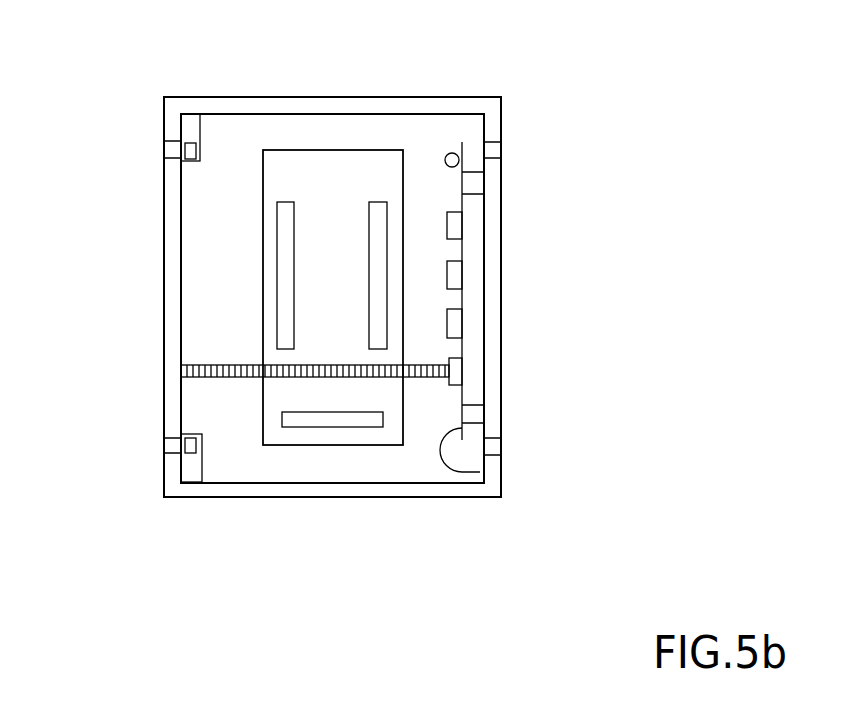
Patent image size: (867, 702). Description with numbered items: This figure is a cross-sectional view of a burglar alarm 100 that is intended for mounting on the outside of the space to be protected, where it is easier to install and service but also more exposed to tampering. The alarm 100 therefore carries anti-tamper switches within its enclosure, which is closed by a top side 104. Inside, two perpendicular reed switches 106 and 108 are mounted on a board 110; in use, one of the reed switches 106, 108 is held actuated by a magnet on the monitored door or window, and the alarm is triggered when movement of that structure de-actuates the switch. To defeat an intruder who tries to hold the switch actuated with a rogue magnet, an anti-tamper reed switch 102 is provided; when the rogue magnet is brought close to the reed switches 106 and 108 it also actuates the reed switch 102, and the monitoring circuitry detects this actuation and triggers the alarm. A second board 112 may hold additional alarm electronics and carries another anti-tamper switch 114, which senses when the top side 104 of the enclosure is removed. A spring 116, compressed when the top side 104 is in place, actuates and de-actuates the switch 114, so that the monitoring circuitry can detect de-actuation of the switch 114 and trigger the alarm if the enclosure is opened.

The burglar alarm 100 is at (513, 541).
The reed switch 102 is at (283, 223).
The top side 104 is at (173, 383).
The reed switch 106 is at (367, 213).
The reed switch 108 is at (313, 415).
The board 110 is at (287, 147).
The second board 112 is at (480, 472).
The anti-tamper switch 114 is at (453, 362).
The spring 116 is at (222, 378).